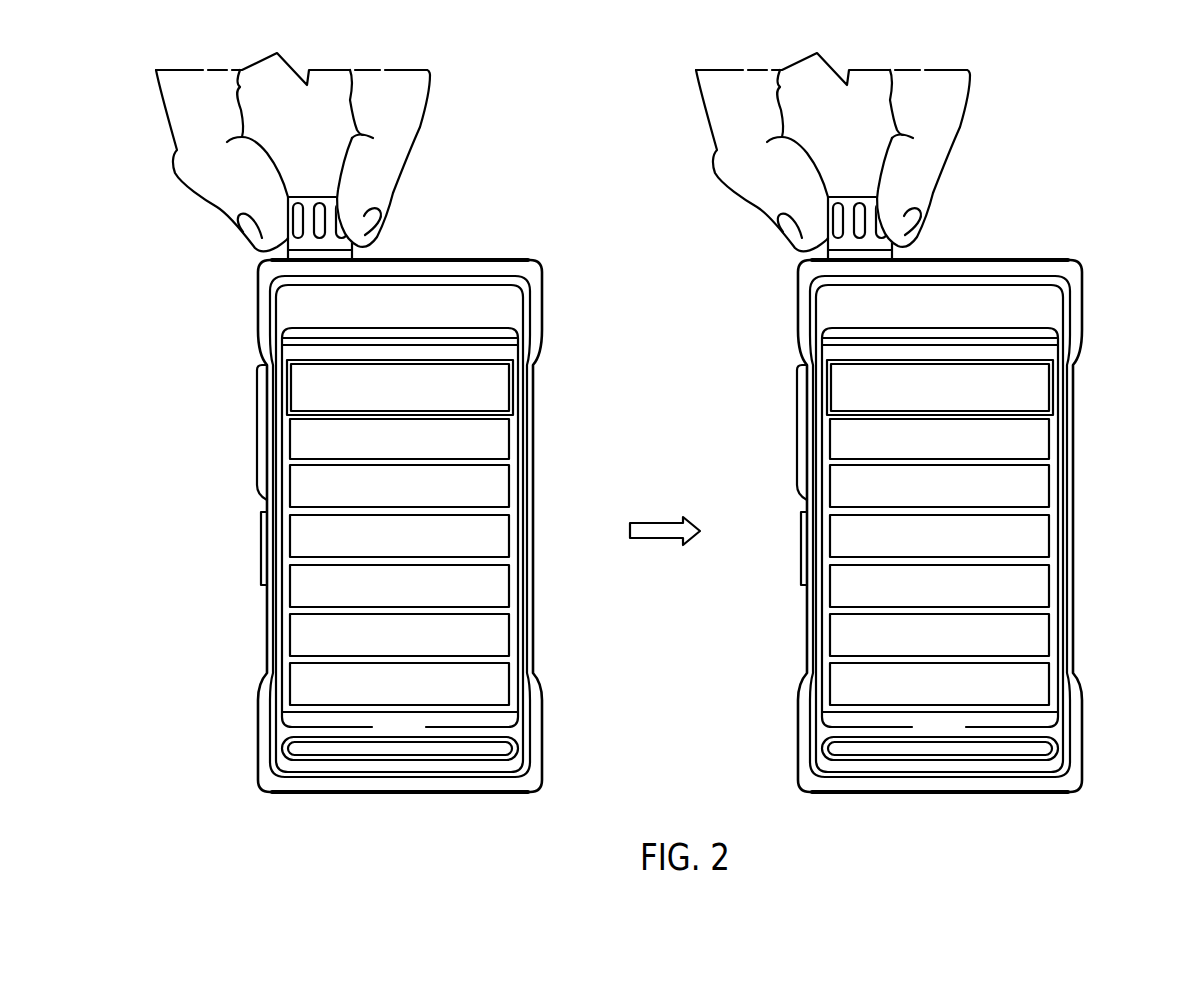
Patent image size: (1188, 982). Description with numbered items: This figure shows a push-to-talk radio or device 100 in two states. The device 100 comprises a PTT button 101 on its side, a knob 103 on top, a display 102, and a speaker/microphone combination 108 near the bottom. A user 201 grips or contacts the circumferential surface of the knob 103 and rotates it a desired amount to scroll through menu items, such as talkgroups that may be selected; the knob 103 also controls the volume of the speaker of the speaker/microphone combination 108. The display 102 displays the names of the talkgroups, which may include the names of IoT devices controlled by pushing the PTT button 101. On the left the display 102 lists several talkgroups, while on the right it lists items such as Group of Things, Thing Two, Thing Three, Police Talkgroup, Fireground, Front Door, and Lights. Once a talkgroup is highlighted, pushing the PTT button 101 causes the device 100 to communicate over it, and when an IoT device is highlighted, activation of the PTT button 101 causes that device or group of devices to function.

The push-to-talk radio 100 is at (552, 378).
The PTT button 101 is at (257, 432).
The display 102 is at (420, 733).
The knob 103 is at (315, 197).
The speaker/microphone combination 108 is at (490, 748).
The user 201 is at (423, 128).